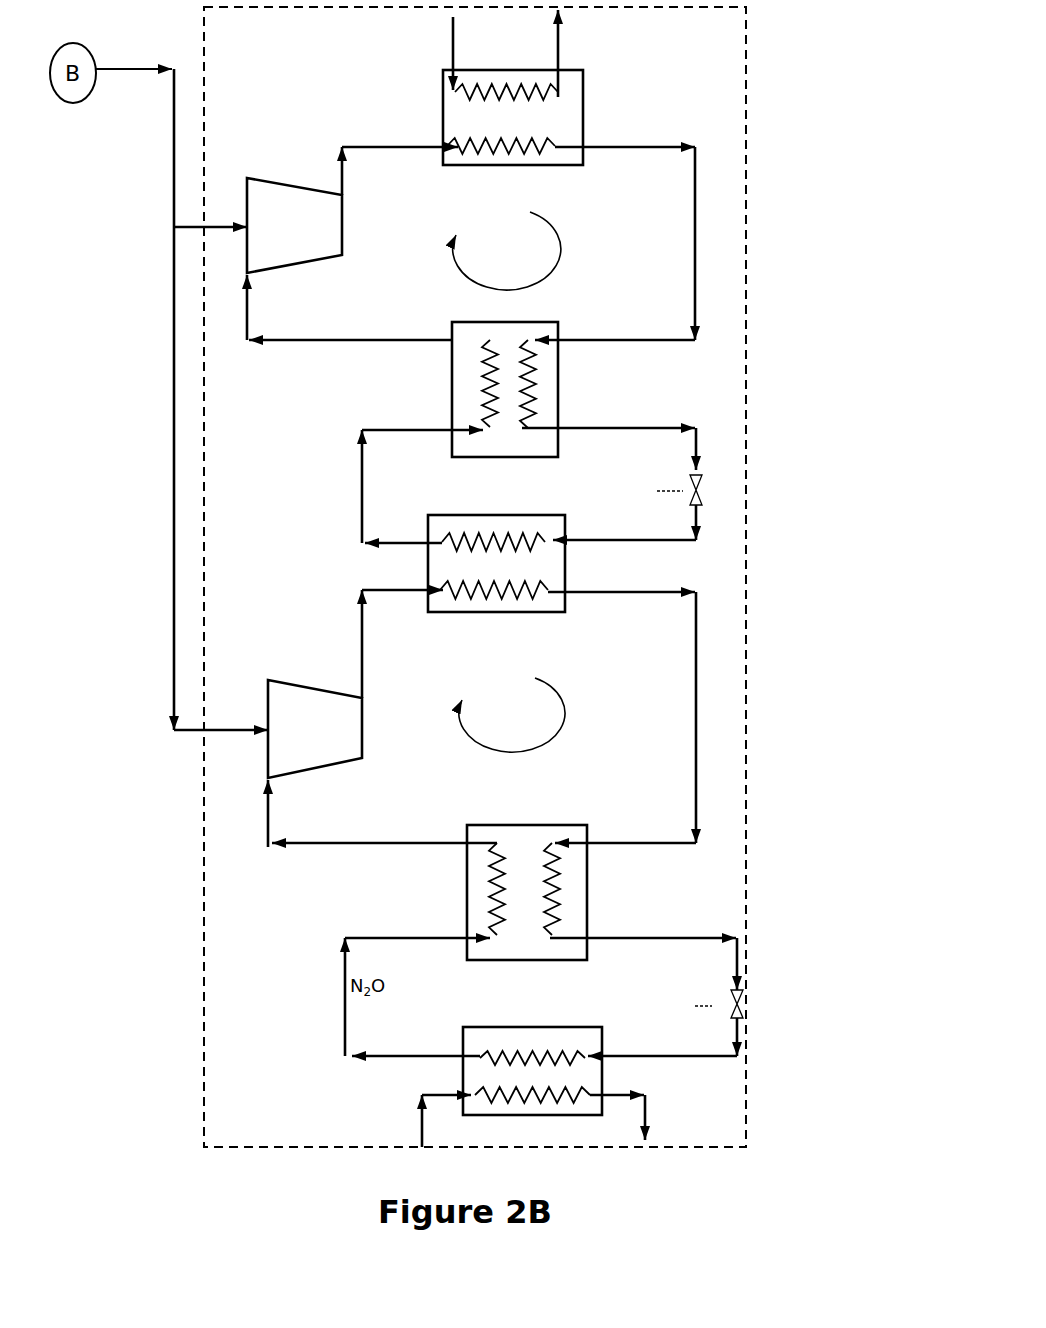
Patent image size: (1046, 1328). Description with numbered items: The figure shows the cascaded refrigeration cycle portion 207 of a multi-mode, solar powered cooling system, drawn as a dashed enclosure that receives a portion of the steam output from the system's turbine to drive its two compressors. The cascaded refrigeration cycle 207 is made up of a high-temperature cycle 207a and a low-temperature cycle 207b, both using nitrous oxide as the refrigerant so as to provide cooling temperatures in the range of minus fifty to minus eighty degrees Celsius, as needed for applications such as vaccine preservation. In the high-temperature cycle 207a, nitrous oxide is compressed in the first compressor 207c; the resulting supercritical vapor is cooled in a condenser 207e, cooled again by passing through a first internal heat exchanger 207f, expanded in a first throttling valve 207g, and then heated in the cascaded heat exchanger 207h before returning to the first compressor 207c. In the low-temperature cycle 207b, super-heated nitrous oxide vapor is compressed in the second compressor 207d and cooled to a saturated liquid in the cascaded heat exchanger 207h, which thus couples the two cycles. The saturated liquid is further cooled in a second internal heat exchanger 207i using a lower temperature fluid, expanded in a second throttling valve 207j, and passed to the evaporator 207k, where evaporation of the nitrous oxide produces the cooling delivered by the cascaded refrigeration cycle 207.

The cascaded refrigeration cycle 207 is at (203, 1080).
The high-temperature cycle 207a is at (507, 251).
The low-temperature cycle 207b is at (512, 715).
The compressor (Comp 1) 207c is at (306, 188).
The compressor (Comp 2) 207d is at (323, 690).
The condenser 207e is at (585, 108).
The internal heat exchanger (IHX1) 207f is at (558, 405).
The throttling valve (TV4) 207g is at (688, 480).
The cascaded heat exchanger (CHX) 207h is at (500, 515).
The internal heat exchanger (IHX2) 207i is at (546, 823).
The throttling valve (TV5) 207j is at (732, 998).
The evaporator 207k is at (515, 1027).